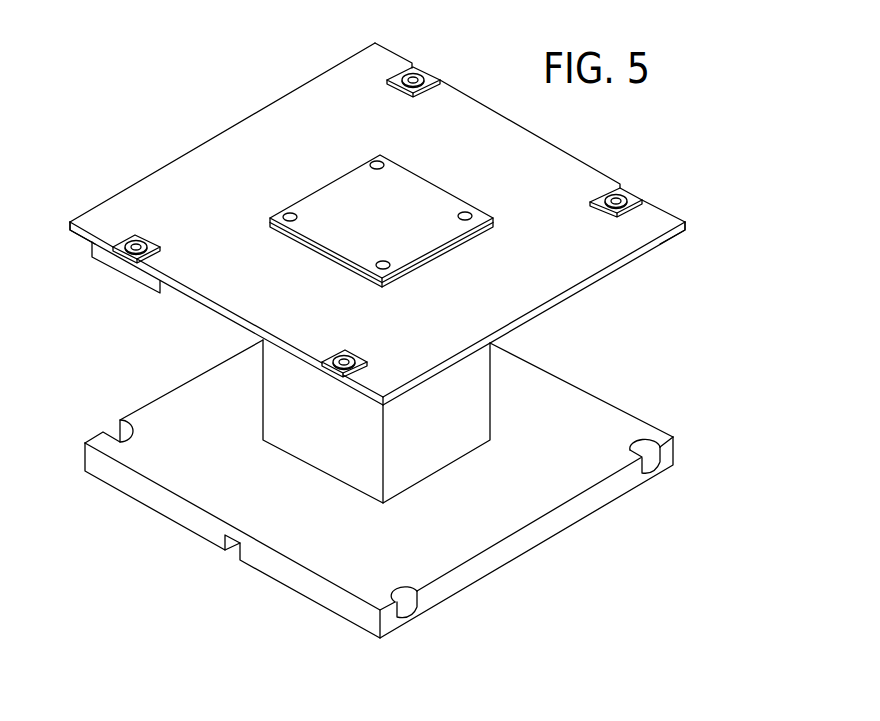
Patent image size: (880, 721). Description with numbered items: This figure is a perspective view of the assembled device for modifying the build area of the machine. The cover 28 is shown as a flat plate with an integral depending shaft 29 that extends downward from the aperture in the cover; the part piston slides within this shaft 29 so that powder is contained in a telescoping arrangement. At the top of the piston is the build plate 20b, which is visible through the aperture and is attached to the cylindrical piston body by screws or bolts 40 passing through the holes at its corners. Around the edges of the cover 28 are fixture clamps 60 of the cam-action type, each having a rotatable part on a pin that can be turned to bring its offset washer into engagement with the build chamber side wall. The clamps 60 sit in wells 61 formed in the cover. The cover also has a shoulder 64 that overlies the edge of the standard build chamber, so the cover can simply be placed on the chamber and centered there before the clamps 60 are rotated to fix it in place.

The build plate 20b is at (427, 202).
The cover 28 is at (532, 163).
The depending shaft 29 is at (494, 397).
The screws or bolts 40 is at (372, 163).
The fixture clamps 60 is at (430, 69).
The wells 61 is at (150, 282).
The shoulder 64 is at (82, 237).